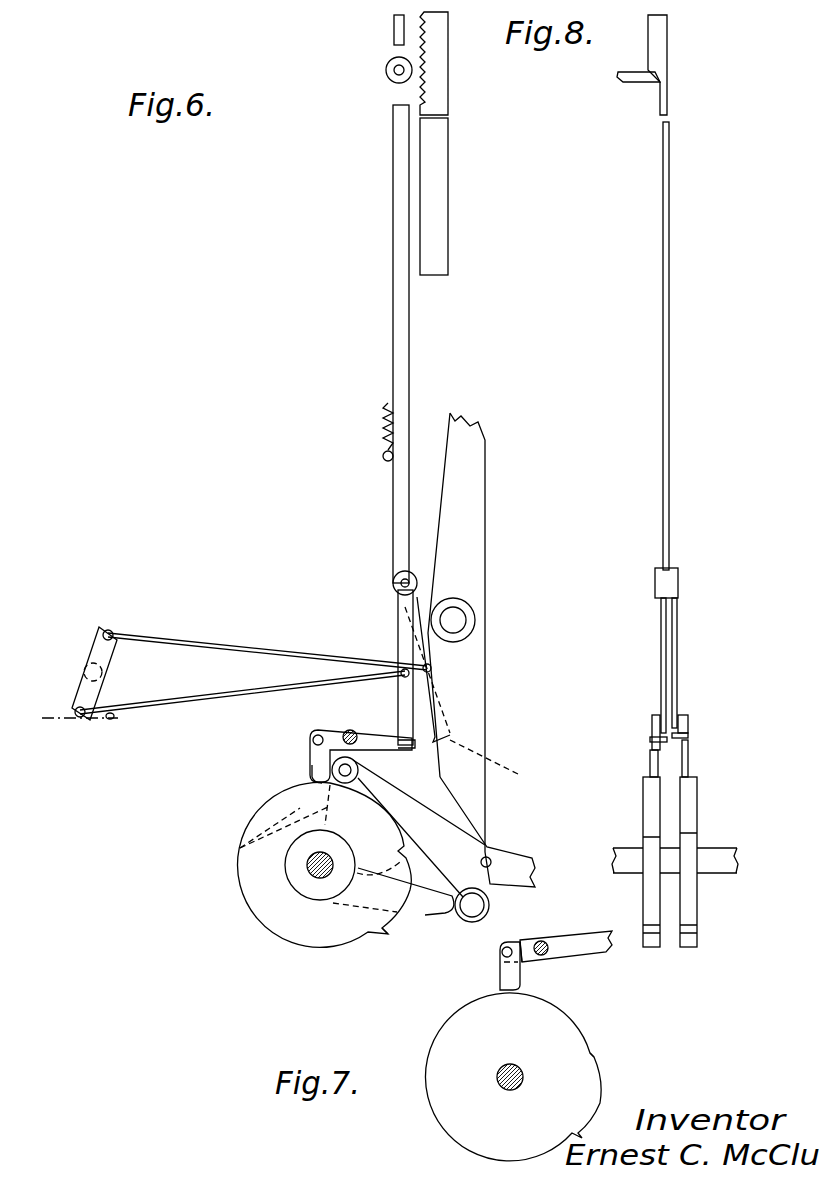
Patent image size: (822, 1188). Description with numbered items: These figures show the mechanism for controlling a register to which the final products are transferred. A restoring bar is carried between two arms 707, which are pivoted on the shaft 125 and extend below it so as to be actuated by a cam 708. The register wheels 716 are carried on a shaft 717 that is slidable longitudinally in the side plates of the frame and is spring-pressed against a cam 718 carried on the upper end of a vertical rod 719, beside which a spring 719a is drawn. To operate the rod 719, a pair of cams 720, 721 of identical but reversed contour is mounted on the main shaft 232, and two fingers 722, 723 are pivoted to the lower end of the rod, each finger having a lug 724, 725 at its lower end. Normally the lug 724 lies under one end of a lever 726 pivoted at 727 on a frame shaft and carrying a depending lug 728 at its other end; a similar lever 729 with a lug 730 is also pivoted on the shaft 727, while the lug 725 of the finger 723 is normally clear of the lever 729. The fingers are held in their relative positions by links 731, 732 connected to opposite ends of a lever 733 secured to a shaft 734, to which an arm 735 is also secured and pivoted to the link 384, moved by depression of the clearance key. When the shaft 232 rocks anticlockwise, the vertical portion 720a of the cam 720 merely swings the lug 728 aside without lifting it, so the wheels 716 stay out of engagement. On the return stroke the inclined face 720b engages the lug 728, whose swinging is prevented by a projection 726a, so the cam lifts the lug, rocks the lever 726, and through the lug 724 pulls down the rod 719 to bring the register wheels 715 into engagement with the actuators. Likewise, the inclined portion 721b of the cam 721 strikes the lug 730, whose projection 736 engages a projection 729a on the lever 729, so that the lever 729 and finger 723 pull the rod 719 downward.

In FIG. 6, the shaft 125 is at (457, 618).
In FIG. 6, the main shaft 232 is at (307, 875).
In FIG. 7, the main shaft 232 is at (497, 1088).
In FIG. 8, the main shaft 232 is at (718, 869).
In FIG. 6, the link 384 is at (60, 722).
In FIG. 6, the arm 707 is at (470, 492).
In FIG. 6, the cam 708 is at (432, 893).
In FIG. 6, the register wheels 715 is at (240, 848).
In FIG. 6, the register wheels 716 is at (386, 72).
In FIG. 6, the shaft 717 is at (406, 82).
In FIG. 8, the cam 718 is at (668, 73).
In FIG. 6, the vertical rod 719 is at (400, 318).
In FIG. 8, the vertical rod 719 is at (663, 347).
In FIG. 6, the spring 719a is at (381, 436).
In FIG. 6, the cam 720 is at (327, 932).
In FIG. 8, the cam 720 is at (690, 810).
In FIG. 6, the vertical portion 720a is at (403, 850).
In FIG. 6, the inclined face 720b is at (377, 935).
In FIG. 7, the cam 721 is at (437, 1058).
In FIG. 8, the cam 721 is at (652, 801).
In FIG. 7, the inclined portion 721b is at (594, 1053).
In FIG. 6, the finger 722 is at (396, 702).
In FIG. 8, the finger 722 is at (676, 646).
In FIG. 6, the finger 723 is at (425, 702).
In FIG. 8, the finger 723 is at (662, 641).
In FIG. 6, the lug 724 is at (445, 750).
In FIG. 6, the lug 725 is at (507, 767).
In FIG. 6, the lever 726 is at (371, 765).
In FIG. 8, the lever 726 is at (683, 716).
In FIG. 6, the projection 726a is at (325, 760).
In FIG. 6, the pivot 727 is at (345, 736).
In FIG. 7, the pivot 727 is at (543, 940).
In FIG. 6, the depending lug 728 is at (310, 748).
In FIG. 8, the depending lug 728 is at (689, 760).
In FIG. 7, the lever 729 is at (578, 938).
In FIG. 8, the lever 729 is at (655, 725).
In FIG. 7, the projection 729a is at (523, 945).
In FIG. 7, the lug 730 is at (500, 972).
In FIG. 8, the lug 730 is at (649, 760).
In FIG. 6, the link 731 is at (230, 699).
In FIG. 6, the link 732 is at (243, 650).
In FIG. 6, the lever 733 is at (108, 628).
In FIG. 6, the shaft 734 is at (90, 665).
In FIG. 6, the arm 735 is at (110, 692).
In FIG. 6, the projection 736 is at (518, 940).